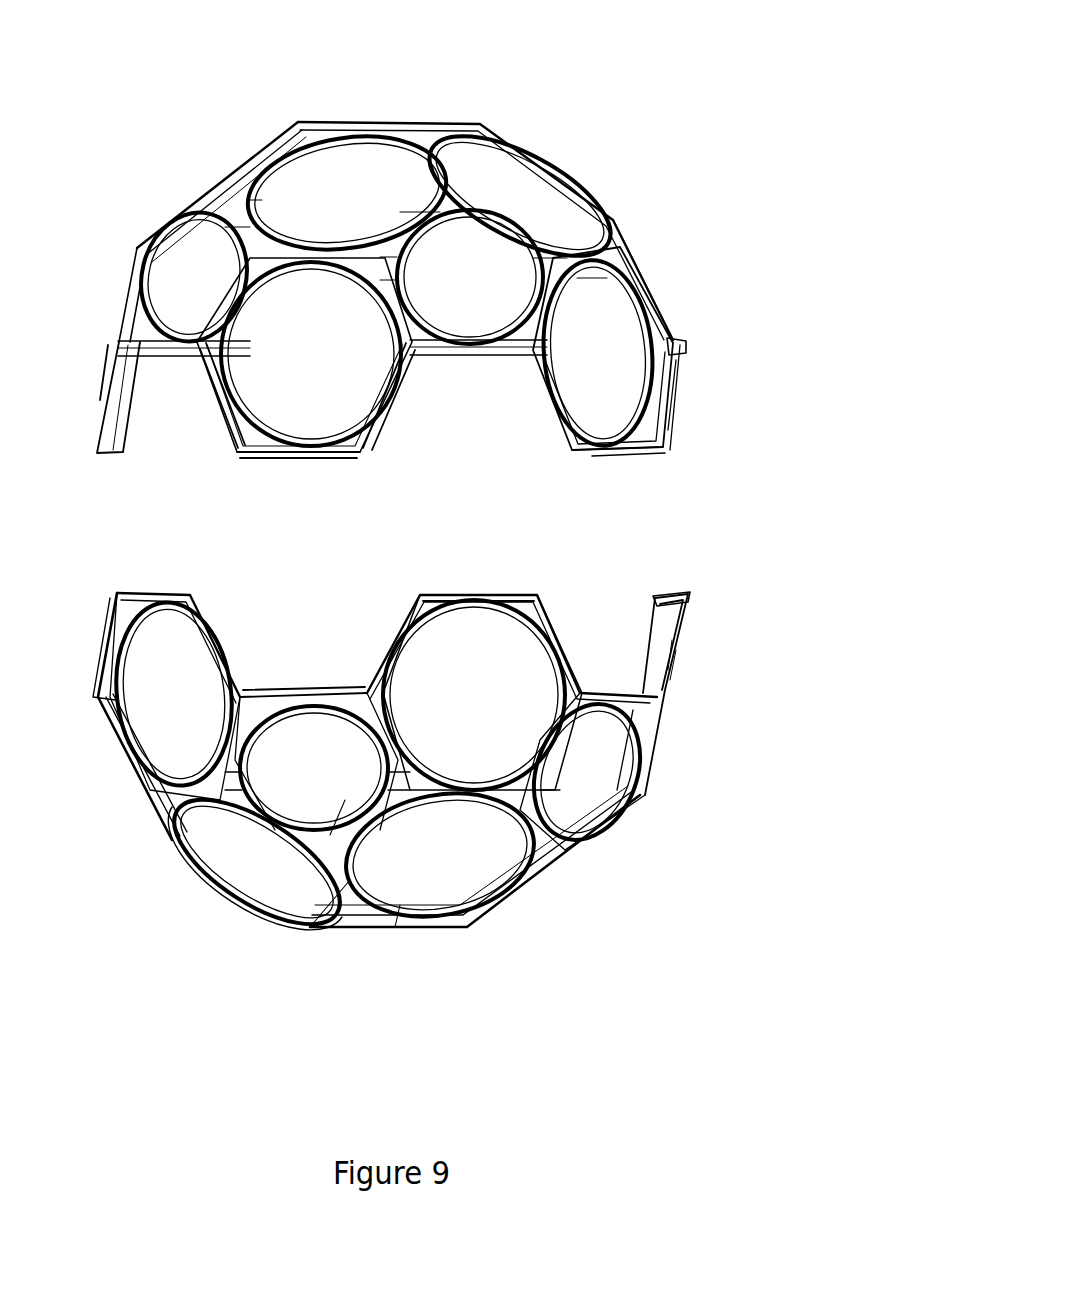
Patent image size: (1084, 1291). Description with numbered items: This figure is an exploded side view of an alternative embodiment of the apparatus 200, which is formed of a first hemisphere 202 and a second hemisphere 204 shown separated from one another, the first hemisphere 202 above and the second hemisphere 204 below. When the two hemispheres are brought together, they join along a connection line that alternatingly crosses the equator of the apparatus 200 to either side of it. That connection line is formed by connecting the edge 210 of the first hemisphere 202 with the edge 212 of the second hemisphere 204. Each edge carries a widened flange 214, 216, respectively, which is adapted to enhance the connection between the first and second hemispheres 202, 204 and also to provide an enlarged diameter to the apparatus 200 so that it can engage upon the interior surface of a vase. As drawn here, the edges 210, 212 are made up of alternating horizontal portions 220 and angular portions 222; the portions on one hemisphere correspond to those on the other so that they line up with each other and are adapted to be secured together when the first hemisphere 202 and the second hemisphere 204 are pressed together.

The apparatus 200 is at (618, 65).
The first hemisphere 202 is at (612, 217).
The second hemisphere 204 is at (638, 803).
The edge of first hemisphere 210 is at (640, 456).
The edge of second hemisphere 212 is at (670, 595).
The widened flange 214 is at (686, 345).
The widened flange 216 is at (687, 595).
The horizontal portion 220 is at (303, 455).
The angular portion 222 is at (547, 402).